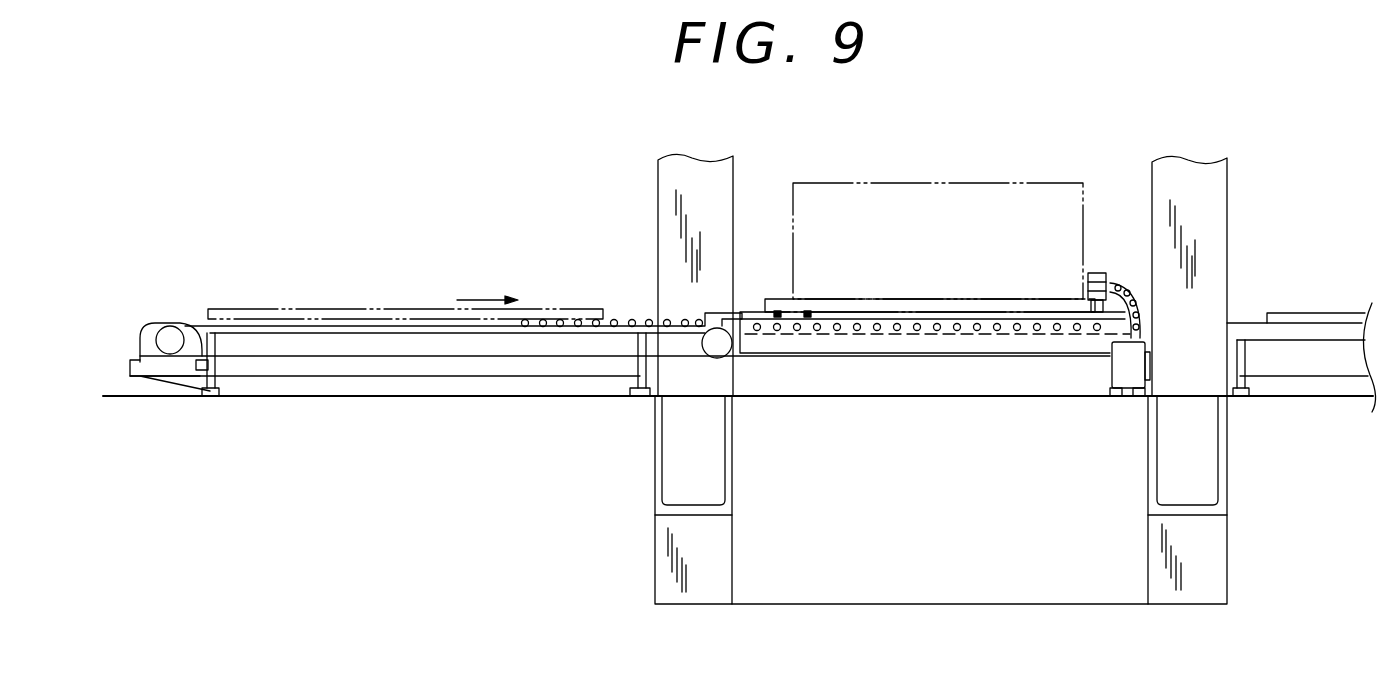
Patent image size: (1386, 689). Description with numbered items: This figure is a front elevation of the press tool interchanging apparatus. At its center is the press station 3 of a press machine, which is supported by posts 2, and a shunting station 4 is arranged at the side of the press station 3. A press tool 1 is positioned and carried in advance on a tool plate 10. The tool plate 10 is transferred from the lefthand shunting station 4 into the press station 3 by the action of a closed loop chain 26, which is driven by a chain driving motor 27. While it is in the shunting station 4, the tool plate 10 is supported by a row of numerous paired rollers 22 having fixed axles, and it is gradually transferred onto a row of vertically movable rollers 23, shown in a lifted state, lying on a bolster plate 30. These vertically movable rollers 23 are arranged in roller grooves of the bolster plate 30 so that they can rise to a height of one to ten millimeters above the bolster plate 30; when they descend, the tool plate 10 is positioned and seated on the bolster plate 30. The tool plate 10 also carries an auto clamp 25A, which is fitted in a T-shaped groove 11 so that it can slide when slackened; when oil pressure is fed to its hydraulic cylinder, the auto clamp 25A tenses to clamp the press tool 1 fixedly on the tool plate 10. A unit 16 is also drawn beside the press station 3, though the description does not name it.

The press tool 1 is at (973, 230).
The posts 2 is at (673, 178).
The press station 3 is at (988, 405).
The shunting stations 4 is at (544, 400).
The tool plate 10 is at (418, 309).
The T-shaped grooves 11 is at (778, 312).
The drive unit 16 is at (1125, 386).
The paired rollers 22 is at (628, 321).
The vertically movable rollers 23 is at (870, 331).
The auto clamp 25A is at (1100, 273).
The closed loop chain 26 is at (415, 357).
The chain driving motor 27 is at (171, 340).
The bolster plate 30 is at (925, 346).